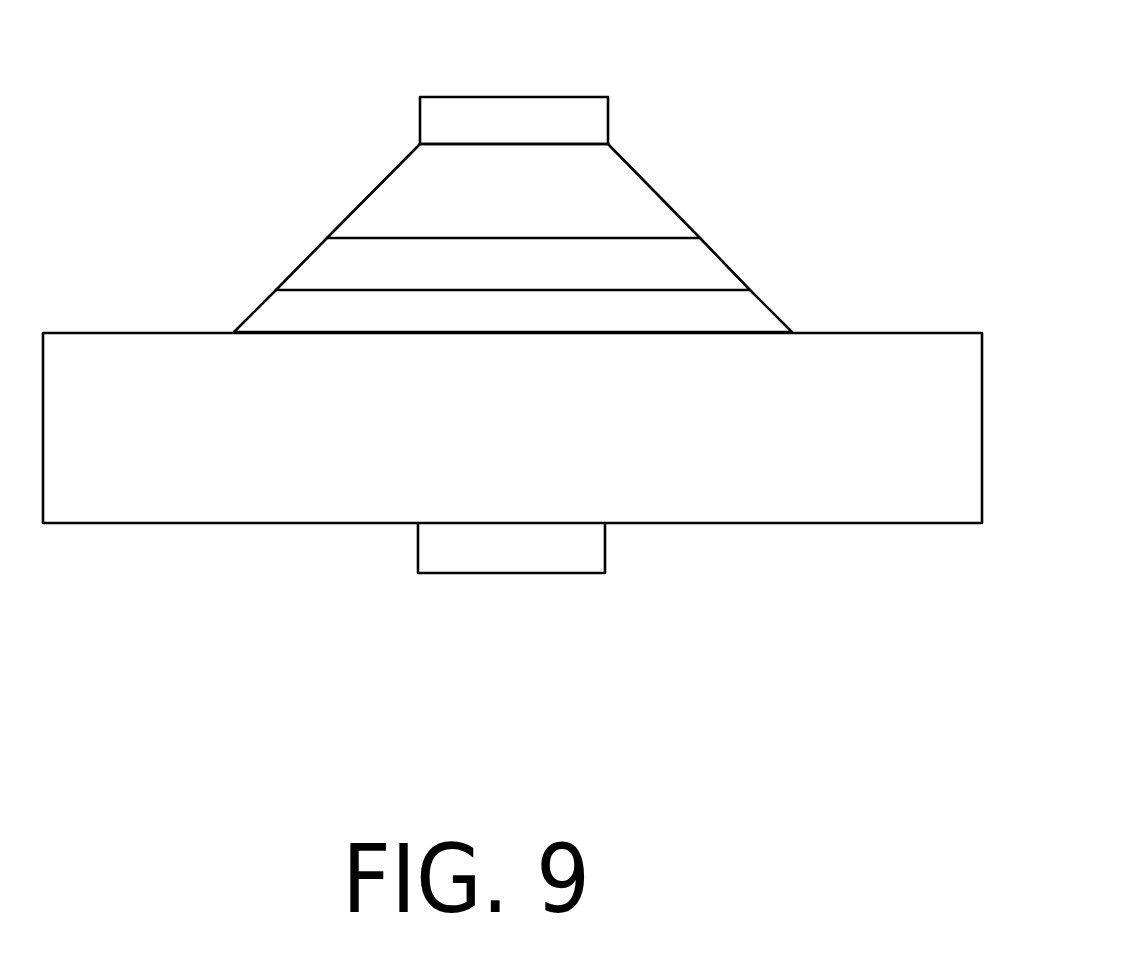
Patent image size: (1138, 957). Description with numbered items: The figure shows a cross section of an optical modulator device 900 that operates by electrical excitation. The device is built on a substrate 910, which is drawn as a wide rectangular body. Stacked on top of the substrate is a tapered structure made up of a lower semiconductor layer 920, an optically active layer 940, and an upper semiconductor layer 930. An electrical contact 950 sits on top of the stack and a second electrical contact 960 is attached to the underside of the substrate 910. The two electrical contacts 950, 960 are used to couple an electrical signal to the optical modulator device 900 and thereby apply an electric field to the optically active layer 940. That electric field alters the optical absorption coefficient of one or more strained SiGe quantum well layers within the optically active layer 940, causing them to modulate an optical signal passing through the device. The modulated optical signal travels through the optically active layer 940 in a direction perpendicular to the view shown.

The optical modulator device 900 is at (93, 670).
The substrate 910 is at (982, 427).
The semiconductor layer 920 is at (773, 310).
The semiconductor layer 930 is at (653, 190).
The optically active layer 940 is at (725, 262).
The electrical contact 950 is at (497, 97).
The electrical contact 960 is at (512, 583).